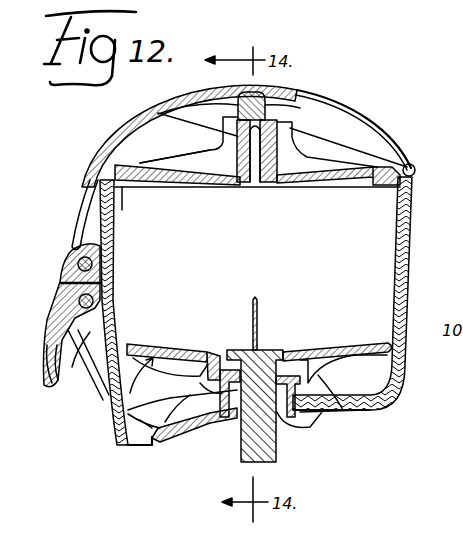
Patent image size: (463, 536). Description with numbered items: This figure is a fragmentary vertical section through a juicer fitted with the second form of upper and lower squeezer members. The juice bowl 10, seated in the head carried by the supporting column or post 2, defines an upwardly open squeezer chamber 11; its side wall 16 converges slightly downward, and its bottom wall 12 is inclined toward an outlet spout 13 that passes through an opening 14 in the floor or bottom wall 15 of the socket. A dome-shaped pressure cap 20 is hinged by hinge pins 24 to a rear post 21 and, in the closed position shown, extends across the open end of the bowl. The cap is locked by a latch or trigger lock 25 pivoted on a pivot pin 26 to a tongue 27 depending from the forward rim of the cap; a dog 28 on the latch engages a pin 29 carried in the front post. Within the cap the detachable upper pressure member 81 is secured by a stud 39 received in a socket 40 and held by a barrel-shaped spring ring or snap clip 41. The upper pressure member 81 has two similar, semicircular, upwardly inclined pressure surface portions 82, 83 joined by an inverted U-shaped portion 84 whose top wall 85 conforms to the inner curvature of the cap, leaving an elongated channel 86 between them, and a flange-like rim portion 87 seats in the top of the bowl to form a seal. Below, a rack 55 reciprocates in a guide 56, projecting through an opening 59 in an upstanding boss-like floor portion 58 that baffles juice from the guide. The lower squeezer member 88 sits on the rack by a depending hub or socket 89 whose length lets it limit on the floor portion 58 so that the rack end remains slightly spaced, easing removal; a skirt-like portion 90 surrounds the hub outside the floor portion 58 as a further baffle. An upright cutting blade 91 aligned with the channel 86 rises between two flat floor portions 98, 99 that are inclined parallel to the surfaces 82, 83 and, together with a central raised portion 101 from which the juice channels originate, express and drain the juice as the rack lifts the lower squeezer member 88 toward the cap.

The supporting column or post 2 is at (186, 499).
The juice bowl 10 is at (454, 239).
The squeezer chamber 11 is at (370, 254).
The bottom wall 12 is at (192, 422).
The outlet spout 13 is at (146, 448).
The opening 14 is at (116, 440).
The bottom wall of socket 15 is at (214, 424).
The side wall 16 is at (398, 284).
The pressure cap 20 is at (362, 120).
The rear post 21 is at (412, 210).
The hinge pins 24 is at (416, 166).
The latch or trigger lock 25 is at (52, 322).
The pivot pin 26 is at (77, 262).
The tongue 27 is at (86, 200).
The dog 28 is at (86, 362).
The pin 29 is at (78, 297).
The stud 39 is at (237, 95).
The socket 40 is at (190, 102).
The spring ring or snap clip 41 is at (274, 110).
The rack 55 is at (258, 466).
The guide 56 is at (308, 422).
The boss-like floor portion 58 is at (168, 432).
The opening 59 is at (237, 350).
The upper pressure member 81 is at (309, 126).
The pressure surface portion 82 is at (330, 187).
The pressure surface portion 83 is at (180, 188).
The inverted U-shaped portion 84 is at (156, 116).
The top wall 85 is at (293, 130).
The channel 86 is at (257, 184).
The flange-like rim portion 87 is at (122, 188).
The lower squeezer member 88 is at (116, 405).
The depending hub or socket 89 is at (297, 350).
The skirt-like portion 90 is at (345, 412).
The cutting blade 91 is at (261, 310).
The flat floor portion 98 is at (342, 347).
The flat floor portion 99 is at (170, 346).
The raised or embossed portion 101 is at (268, 350).